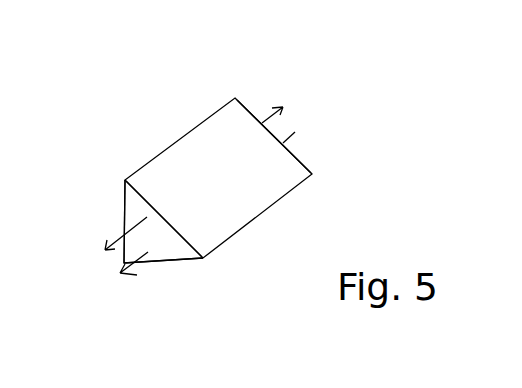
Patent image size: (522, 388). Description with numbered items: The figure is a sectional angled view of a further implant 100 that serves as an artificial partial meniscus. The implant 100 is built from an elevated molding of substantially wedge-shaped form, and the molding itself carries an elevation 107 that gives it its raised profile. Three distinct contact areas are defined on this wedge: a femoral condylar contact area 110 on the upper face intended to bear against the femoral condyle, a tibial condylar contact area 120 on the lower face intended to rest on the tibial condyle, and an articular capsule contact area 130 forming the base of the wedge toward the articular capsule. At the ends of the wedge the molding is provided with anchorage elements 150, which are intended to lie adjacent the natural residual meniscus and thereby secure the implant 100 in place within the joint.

The implant 100 is at (199, 103).
The elevation 107 is at (148, 208).
The femoral condylar contact area 110 is at (248, 183).
The tibial condylar contact area 120 is at (175, 262).
The articular capsule contact area 130 is at (124, 210).
The anchorage elements 150 is at (299, 125).